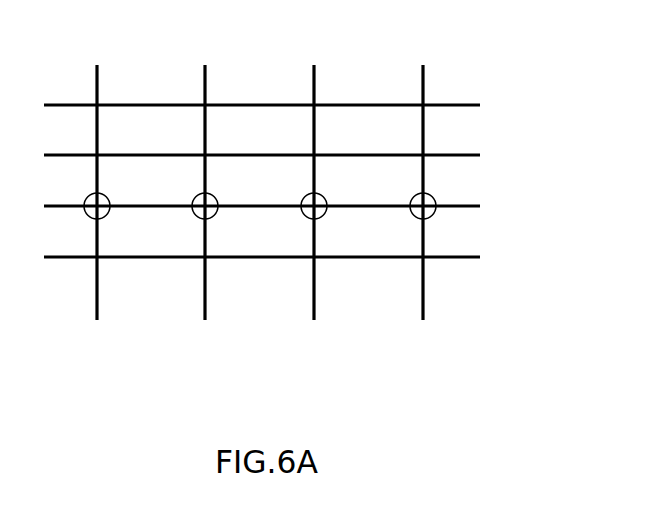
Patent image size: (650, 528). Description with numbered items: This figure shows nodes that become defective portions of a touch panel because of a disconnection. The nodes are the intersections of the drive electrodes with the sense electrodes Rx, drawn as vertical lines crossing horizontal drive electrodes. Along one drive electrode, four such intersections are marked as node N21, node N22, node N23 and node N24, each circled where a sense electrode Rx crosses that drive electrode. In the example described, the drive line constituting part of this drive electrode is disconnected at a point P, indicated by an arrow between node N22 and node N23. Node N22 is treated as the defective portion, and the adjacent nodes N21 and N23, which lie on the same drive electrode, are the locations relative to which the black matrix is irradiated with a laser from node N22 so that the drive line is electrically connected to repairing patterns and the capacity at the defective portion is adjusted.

The sense electrode Rx is at (97, 65).
The node N21 is at (92, 218).
The node N22 is at (211, 218).
The node N23 is at (320, 218).
The node N24 is at (428, 218).
The point P is at (261, 208).